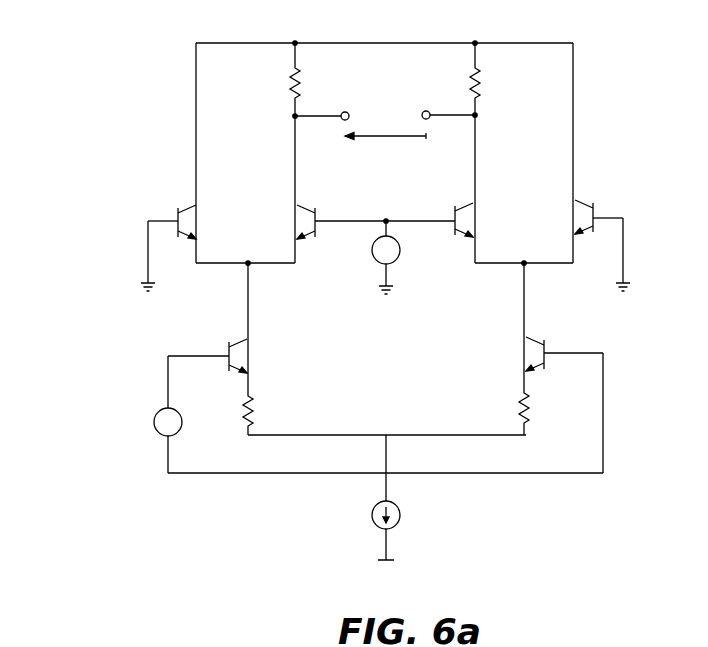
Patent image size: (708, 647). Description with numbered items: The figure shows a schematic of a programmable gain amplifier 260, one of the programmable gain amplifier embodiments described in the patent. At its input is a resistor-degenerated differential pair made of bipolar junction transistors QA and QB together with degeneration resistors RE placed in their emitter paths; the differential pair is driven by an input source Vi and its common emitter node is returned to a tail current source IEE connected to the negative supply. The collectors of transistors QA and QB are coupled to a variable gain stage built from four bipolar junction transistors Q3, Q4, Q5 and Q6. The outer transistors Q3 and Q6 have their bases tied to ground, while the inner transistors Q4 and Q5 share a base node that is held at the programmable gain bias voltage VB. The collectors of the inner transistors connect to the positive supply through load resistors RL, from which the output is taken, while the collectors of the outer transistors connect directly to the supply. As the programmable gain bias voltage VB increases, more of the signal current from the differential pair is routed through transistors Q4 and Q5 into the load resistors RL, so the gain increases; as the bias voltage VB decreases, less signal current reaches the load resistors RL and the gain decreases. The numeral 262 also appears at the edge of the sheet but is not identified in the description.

The programmable gain amplifier 260 is at (50, 33).
The circuit element 262 is at (26, 643).
The bipolar junction transistor Q3 is at (180, 234).
The bipolar junction transistor Q4 is at (365, 234).
The bipolar junction transistor Q5 is at (472, 233).
The bipolar junction transistor Q6 is at (587, 231).
The bipolar junction transistor QA is at (220, 366).
The bipolar junction transistor QB is at (546, 363).
The load resistor RL is at (385, 83).
The resistor RE is at (386, 412).
The programmable gain bias voltage VB is at (401, 256).
The input voltage source Vi is at (156, 414).
The tail current source IEE is at (397, 497).